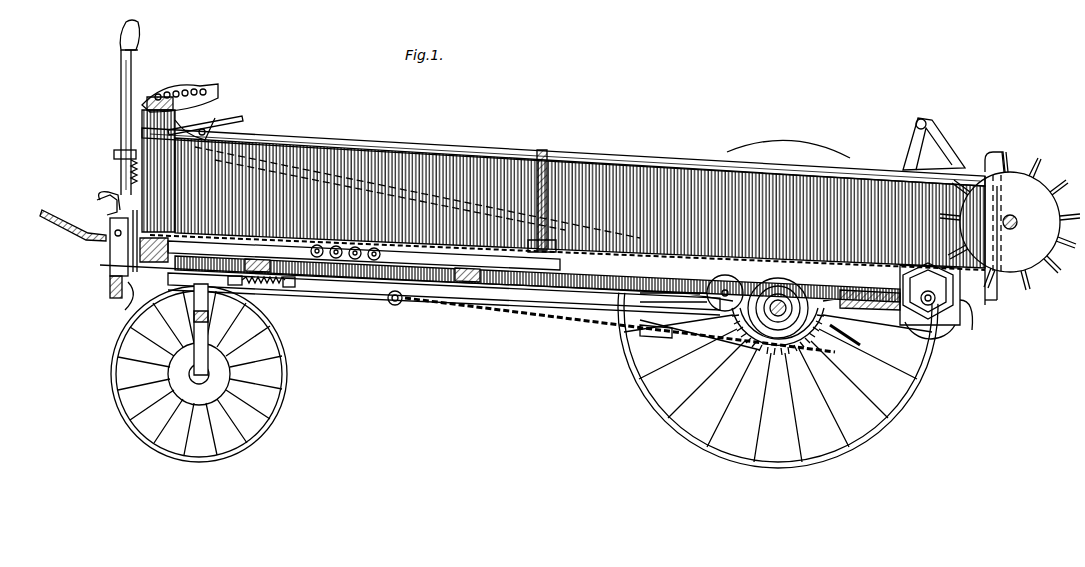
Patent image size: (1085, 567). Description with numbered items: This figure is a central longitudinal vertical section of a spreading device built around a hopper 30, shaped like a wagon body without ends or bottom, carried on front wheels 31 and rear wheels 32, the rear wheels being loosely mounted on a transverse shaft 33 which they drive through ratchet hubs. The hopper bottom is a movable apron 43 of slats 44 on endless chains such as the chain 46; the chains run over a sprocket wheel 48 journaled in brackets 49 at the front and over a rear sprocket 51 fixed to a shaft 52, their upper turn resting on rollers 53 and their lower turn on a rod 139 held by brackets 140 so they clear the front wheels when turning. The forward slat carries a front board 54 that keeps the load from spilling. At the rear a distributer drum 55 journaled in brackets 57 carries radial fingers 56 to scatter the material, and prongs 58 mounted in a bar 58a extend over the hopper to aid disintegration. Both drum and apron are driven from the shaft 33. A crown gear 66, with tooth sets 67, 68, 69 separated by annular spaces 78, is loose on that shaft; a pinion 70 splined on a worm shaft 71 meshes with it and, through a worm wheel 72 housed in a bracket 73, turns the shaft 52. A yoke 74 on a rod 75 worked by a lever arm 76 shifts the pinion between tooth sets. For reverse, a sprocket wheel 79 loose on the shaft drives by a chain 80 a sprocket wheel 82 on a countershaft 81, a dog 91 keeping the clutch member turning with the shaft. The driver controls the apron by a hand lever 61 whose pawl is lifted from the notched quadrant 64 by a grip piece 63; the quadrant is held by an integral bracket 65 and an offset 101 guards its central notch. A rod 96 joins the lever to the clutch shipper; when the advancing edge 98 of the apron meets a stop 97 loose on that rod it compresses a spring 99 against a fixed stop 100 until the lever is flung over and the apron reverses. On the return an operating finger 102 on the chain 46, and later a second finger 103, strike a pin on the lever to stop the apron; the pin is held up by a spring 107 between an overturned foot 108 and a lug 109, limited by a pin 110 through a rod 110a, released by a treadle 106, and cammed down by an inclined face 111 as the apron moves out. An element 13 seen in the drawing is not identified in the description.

The box side 13 is at (684, 217).
The hopper 30 is at (488, 150).
The front carrying wheels 31 is at (268, 400).
The rear carrying wheels 32 is at (648, 393).
The shaft 33 is at (820, 285).
The movable apron 43 is at (850, 340).
The slats 44 is at (752, 222).
The endless chain 46 is at (520, 312).
The sprocket wheel 48 is at (108, 248).
The brackets 49 is at (950, 310).
The sprocket 51 is at (948, 298).
The shaft 52 is at (948, 330).
The rollers 53 is at (356, 260).
The front board or follower 54 is at (548, 180).
The distributer or drum 55 is at (1048, 195).
The radial fingers 56 is at (1038, 160).
The brackets 57 is at (958, 232).
The prongs 58 is at (940, 152).
The bar 58a is at (924, 120).
The hand lever 61 is at (120, 120).
The spring-controlled grip piece 63 is at (140, 70).
The quadrant 64 is at (105, 200).
The bracket 65 is at (150, 240).
The crown gear 66 is at (785, 355).
The set of teeth 67 is at (845, 350).
The set of teeth 68 is at (752, 355).
The set of teeth 69 is at (745, 345).
The pinion 70 is at (880, 290).
The worm shaft 71 is at (940, 340).
The worm wheel 72 is at (838, 330).
The bracket 73 is at (812, 340).
The yoke 74 is at (800, 350).
The rod 75 is at (240, 130).
The lever arm 76 is at (205, 130).
The annular spaces 78 is at (782, 360).
The sprocket wheel 79 is at (790, 280).
The chain 80 is at (860, 290).
The countershaft 81 is at (760, 270).
The sprocket wheel 82 is at (135, 195).
The dog 91 is at (700, 350).
The rod 96 is at (352, 290).
The stop 97 is at (289, 288).
The advancing edge 98 is at (648, 330).
The spring 99 is at (265, 284).
The stop 100 is at (364, 255).
The offset 101 is at (116, 168).
The operating finger 102 is at (378, 246).
The second operating finger 103 is at (410, 250).
The treadle 106 is at (104, 205).
The spring 107 is at (110, 285).
The overturned foot 108 is at (118, 298).
The lug 109 is at (108, 265).
The pin 110 is at (125, 308).
The rod 110a is at (106, 240).
The inclined face 111 is at (392, 248).
The rod 139 is at (392, 308).
The brackets 140 is at (397, 306).